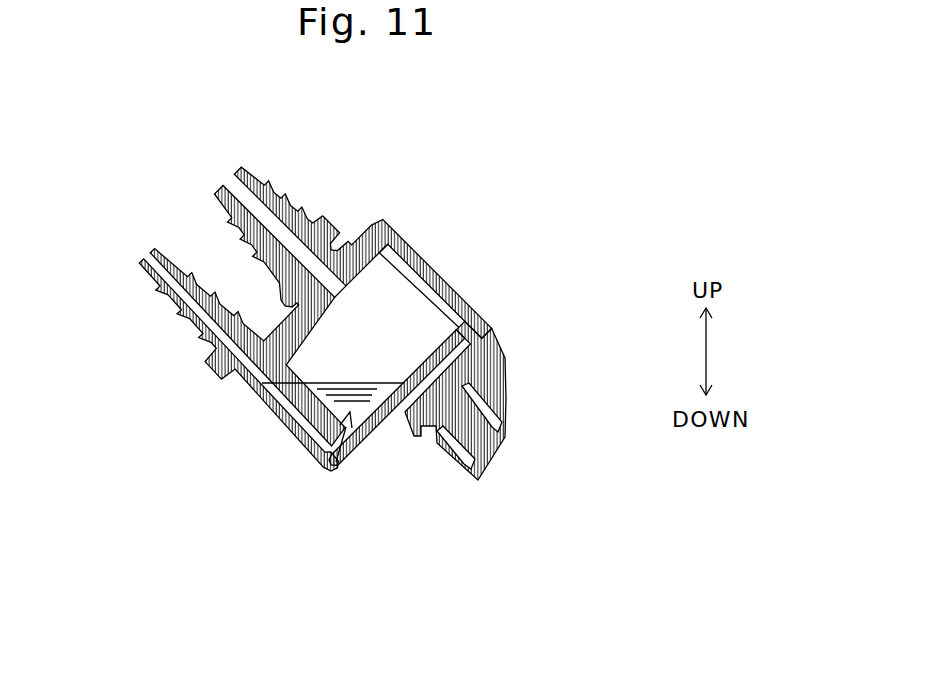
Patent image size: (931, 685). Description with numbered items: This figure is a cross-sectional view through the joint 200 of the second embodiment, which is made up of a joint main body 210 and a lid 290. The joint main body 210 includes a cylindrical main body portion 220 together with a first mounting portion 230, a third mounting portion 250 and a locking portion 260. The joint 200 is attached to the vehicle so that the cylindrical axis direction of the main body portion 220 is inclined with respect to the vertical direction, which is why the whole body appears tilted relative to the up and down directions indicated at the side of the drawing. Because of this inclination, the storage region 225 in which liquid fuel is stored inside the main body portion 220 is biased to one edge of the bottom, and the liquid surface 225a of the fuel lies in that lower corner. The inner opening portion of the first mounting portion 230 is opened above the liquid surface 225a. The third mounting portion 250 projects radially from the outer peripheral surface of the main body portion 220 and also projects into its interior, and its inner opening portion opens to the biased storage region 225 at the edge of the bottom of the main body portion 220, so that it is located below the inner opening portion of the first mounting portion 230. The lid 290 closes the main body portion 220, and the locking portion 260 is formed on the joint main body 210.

The joint 200 is at (493, 391).
The joint main body 210 is at (495, 360).
The main body portion 220 is at (357, 462).
The storage region 225 is at (337, 463).
The liquid surface 225a is at (394, 377).
The first mounting portion 230 is at (298, 214).
The third mounting portion 250 is at (163, 301).
The locking portion 260 is at (459, 470).
The lid 290 is at (481, 314).